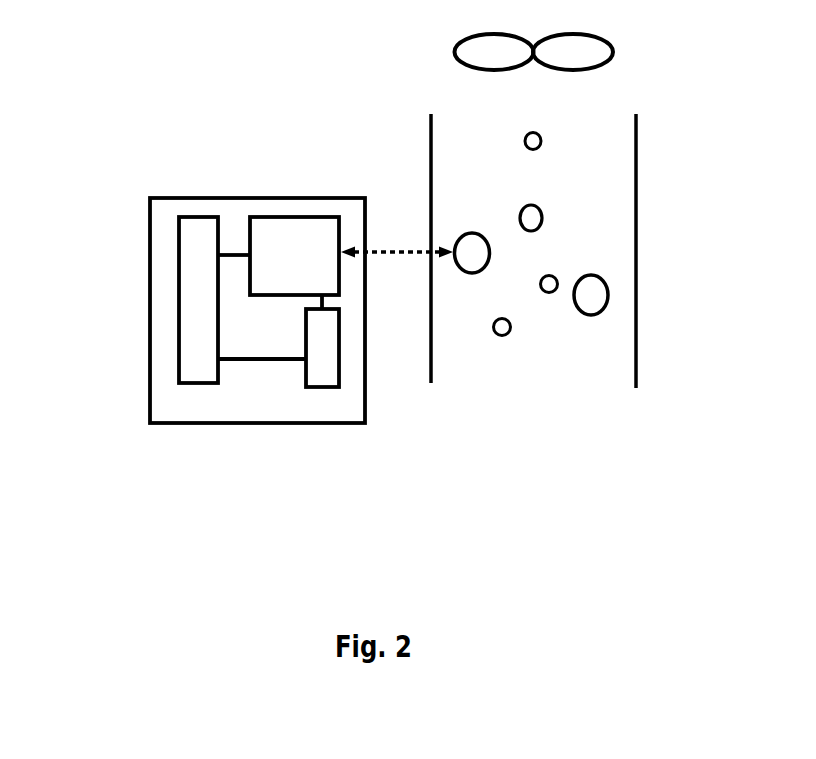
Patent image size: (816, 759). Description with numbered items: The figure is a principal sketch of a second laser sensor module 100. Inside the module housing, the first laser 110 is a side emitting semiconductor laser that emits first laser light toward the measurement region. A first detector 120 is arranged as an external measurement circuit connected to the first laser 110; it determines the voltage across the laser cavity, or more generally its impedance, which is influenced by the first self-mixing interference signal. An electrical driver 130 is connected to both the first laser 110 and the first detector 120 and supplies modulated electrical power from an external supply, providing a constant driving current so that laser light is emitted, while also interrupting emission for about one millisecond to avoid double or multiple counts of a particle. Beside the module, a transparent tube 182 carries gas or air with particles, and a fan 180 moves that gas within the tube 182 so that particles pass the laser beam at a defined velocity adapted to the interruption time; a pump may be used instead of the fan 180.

The laser sensor module 100 is at (166, 86).
The first laser 110 is at (302, 217).
The first detector 120 is at (322, 387).
The electrical driver 130 is at (179, 307).
The fan 180 is at (614, 50).
The transparent tube 182 is at (636, 330).